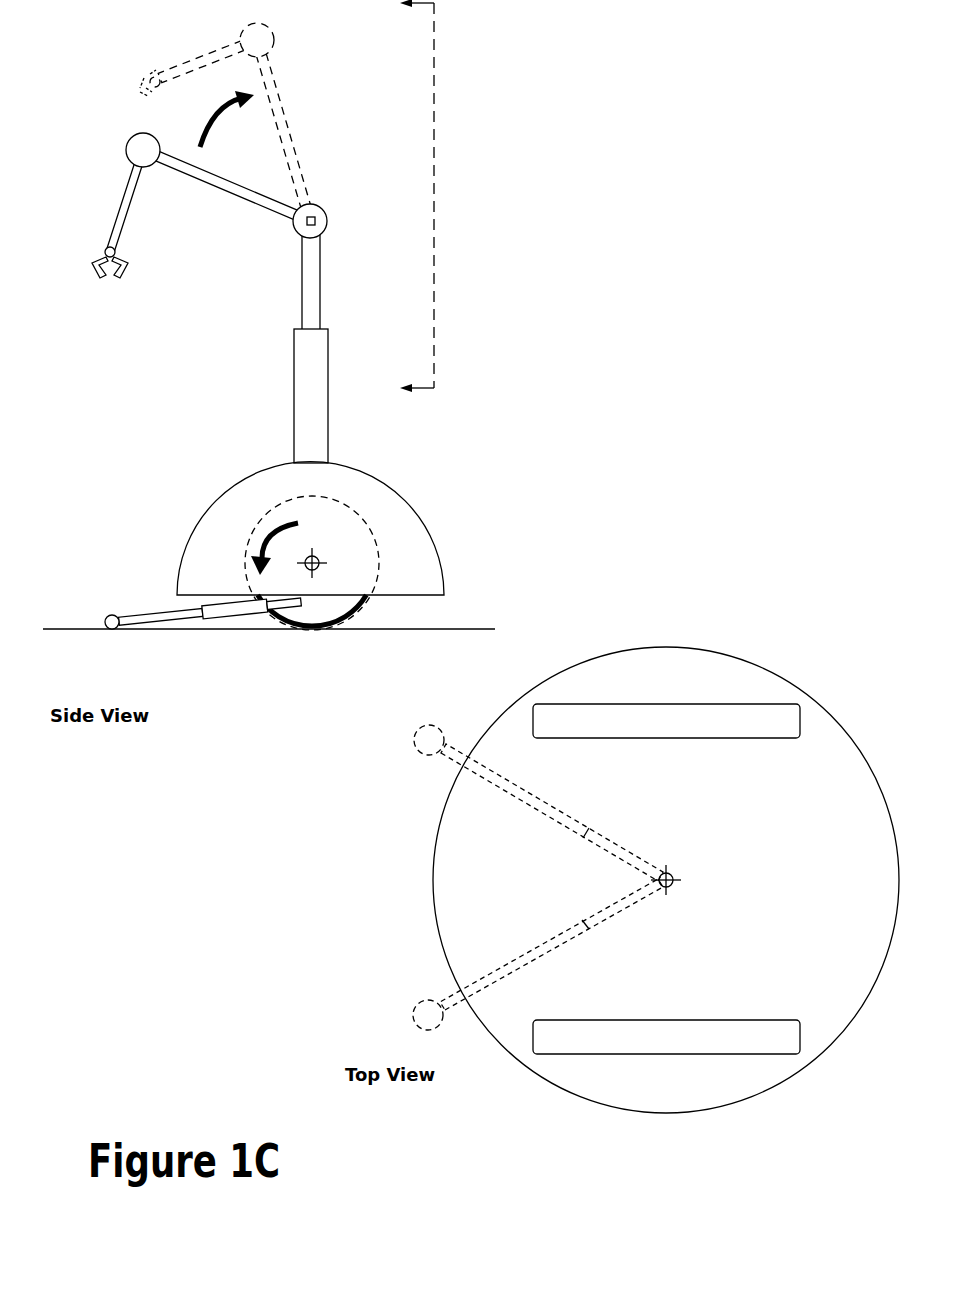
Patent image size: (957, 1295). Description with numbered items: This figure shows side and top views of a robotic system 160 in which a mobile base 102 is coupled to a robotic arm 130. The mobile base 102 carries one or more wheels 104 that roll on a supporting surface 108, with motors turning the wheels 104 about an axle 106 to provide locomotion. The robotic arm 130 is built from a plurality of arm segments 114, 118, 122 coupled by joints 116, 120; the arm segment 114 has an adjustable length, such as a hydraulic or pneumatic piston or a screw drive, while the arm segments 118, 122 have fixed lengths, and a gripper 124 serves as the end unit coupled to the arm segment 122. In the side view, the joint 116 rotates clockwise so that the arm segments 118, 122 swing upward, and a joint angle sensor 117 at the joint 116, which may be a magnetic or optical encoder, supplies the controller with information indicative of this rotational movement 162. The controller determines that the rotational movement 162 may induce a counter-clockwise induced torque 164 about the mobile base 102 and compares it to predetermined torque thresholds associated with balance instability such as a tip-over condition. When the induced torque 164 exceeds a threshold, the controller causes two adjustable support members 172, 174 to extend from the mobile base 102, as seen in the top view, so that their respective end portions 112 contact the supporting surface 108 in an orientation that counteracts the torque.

The mobile base 102 is at (375, 477).
The wheels 104 is at (355, 610).
The axle 106 is at (320, 570).
The supporting surface 108 is at (63, 630).
The end portion 112 is at (108, 615).
The arm segment 114 is at (328, 368).
The joint 116 is at (326, 230).
The joint angle sensor 117 is at (317, 218).
The arm segment 118 is at (226, 198).
The joint 120 is at (128, 138).
The arm segment 122 is at (123, 195).
The gripper 124 is at (122, 275).
The robotic arm 130 is at (434, 248).
The robotic system 160 is at (498, 128).
The rotational movement 162 is at (224, 143).
The induced torque 164 is at (304, 533).
The adjustable support member 172 is at (502, 830).
The adjustable support member 174 is at (135, 612).